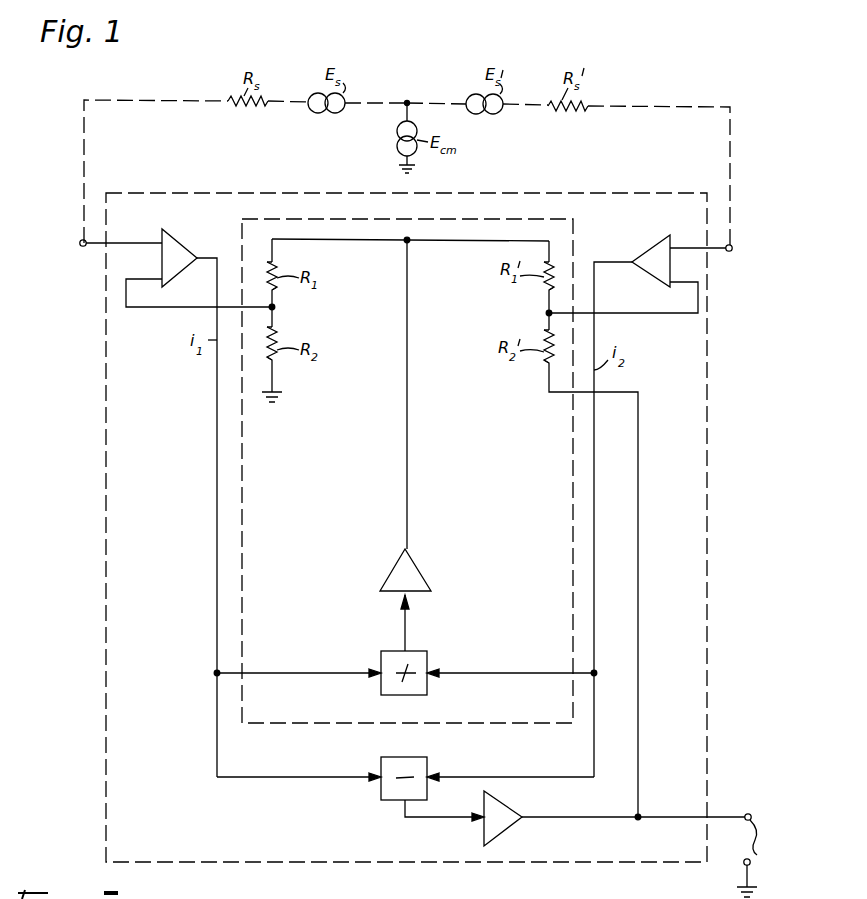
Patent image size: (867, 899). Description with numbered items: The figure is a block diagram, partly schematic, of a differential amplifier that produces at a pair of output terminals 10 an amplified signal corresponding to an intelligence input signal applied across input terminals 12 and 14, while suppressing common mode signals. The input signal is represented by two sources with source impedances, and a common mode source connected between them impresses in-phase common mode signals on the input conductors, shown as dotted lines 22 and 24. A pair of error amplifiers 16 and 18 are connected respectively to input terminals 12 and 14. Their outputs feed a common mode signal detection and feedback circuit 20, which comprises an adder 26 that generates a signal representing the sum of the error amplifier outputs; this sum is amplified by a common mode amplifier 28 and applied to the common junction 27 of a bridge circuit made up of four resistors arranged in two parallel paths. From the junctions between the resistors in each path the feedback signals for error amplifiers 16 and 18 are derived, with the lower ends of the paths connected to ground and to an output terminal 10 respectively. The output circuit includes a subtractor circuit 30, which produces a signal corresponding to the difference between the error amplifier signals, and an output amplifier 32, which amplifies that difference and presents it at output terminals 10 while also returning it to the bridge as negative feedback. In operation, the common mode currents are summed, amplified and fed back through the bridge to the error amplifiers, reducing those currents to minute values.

The output terminals 10 is at (745, 855).
The input terminal 12 is at (80, 247).
The input terminal 14 is at (728, 268).
The error amplifier 16 is at (175, 250).
The error amplifier 18 is at (657, 257).
The common mode signal detection and feedback circuit 20 is at (241, 590).
The input conductor 22 is at (84, 150).
The input conductor 24 is at (730, 177).
The adder 26 is at (418, 658).
The common junction 27 is at (404, 243).
The common mode amplifier 28 is at (411, 578).
The subtractor circuit 30 is at (415, 765).
The output amplifier 32 is at (500, 815).